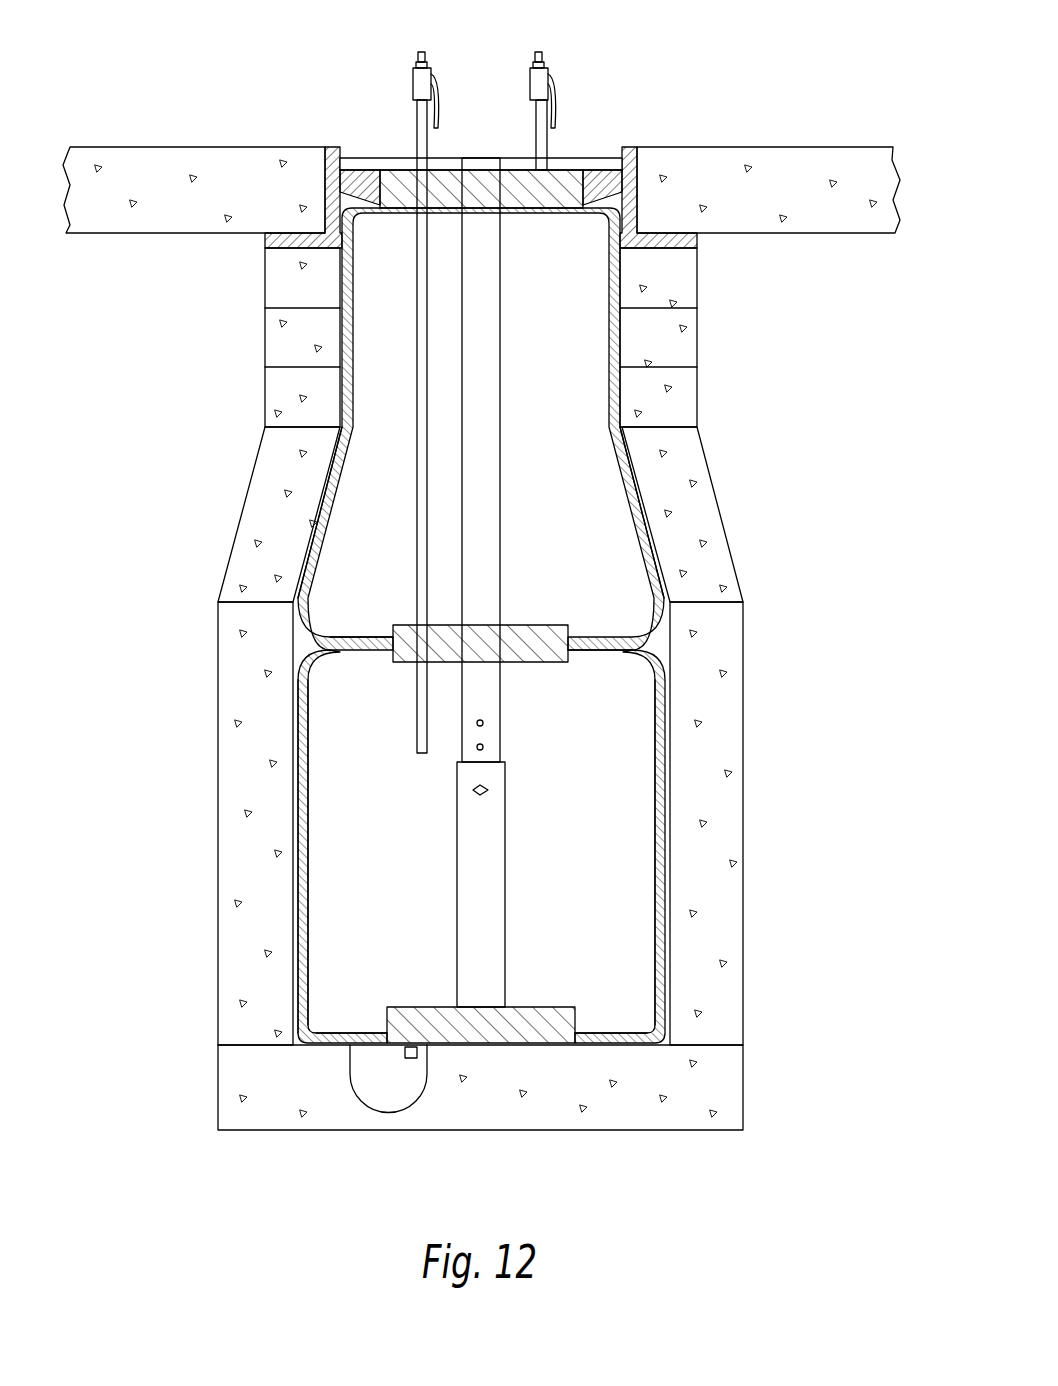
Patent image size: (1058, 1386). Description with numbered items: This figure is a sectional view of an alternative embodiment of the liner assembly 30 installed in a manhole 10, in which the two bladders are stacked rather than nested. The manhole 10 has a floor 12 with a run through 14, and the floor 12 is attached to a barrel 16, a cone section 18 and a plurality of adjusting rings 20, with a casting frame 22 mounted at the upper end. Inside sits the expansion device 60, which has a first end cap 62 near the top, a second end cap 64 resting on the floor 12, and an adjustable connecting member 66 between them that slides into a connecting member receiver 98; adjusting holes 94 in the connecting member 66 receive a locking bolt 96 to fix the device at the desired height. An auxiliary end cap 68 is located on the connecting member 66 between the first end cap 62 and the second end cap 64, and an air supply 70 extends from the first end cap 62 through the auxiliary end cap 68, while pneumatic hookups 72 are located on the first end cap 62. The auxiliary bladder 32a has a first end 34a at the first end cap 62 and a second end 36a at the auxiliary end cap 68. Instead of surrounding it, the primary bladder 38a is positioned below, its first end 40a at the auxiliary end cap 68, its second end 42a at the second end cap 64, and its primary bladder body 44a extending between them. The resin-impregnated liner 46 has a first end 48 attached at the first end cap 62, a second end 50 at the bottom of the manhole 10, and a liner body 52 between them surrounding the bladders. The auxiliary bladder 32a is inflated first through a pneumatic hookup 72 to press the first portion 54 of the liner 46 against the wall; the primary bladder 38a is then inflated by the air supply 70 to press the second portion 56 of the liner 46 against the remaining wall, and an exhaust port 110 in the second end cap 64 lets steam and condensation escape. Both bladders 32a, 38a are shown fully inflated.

The manhole 10 is at (722, 87).
The floor 12 is at (730, 1085).
The run through 14 is at (387, 1094).
The barrel 16 is at (735, 768).
The cone section 18 is at (720, 546).
The adjusting rings 20 is at (682, 297).
The casting frame 22 is at (630, 150).
The liner assembly 30 is at (447, 143).
The auxiliary bladder 32a is at (320, 552).
The first end of auxiliary bladder 34a is at (578, 207).
The second end of auxiliary bladder 36a is at (392, 635).
The primary bladder 38a is at (305, 884).
The first end of primary bladder 40a is at (570, 656).
The second end of primary bladder 42a is at (578, 1040).
The primary bladder body 44a is at (310, 770).
The liner 46 is at (670, 940).
The first end of liner 48 is at (380, 205).
The second end of liner 50 is at (296, 1046).
The liner body 52 is at (296, 782).
The first portion of liner 54 is at (635, 482).
The second portion of liner 56 is at (668, 833).
The expansion device 60 is at (512, 460).
The first end cap 62 is at (560, 170).
The second end cap 64 is at (515, 1017).
The connecting member 66 is at (493, 348).
The auxiliary end cap 68 is at (505, 635).
The air supply 70 is at (417, 500).
The pneumatic hookups 72 is at (413, 82).
The adjusting holes 94 is at (484, 747).
The locking bolt 96 is at (490, 790).
The connecting member receiver 98 is at (468, 822).
The exhaust port 110 is at (400, 1053).